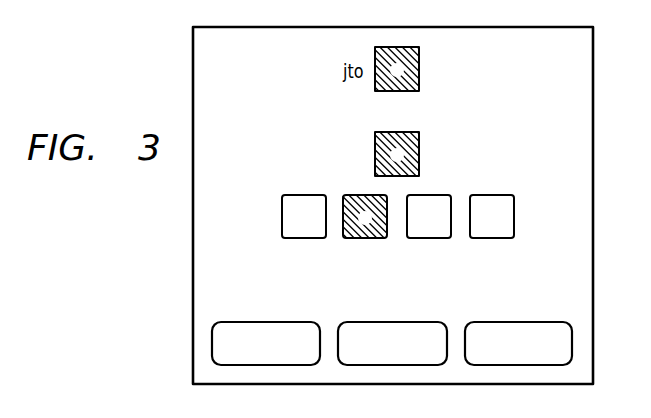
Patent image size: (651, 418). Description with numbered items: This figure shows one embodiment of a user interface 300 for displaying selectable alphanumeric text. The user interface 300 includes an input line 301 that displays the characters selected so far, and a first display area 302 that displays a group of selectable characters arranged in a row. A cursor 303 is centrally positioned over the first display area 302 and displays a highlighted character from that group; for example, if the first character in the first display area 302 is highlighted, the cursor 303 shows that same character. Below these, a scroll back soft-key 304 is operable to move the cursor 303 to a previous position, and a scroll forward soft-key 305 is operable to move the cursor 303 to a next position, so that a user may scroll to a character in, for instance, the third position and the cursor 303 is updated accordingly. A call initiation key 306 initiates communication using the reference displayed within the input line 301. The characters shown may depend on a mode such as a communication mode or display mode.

The user interface 300 is at (193, 268).
The input line 301 is at (420, 70).
The first display area 302 is at (523, 193).
The cursor 303 is at (420, 155).
The scroll back soft-key 304 is at (265, 322).
The scroll forward soft-key 305 is at (390, 322).
The call initiation key 306 is at (520, 322).